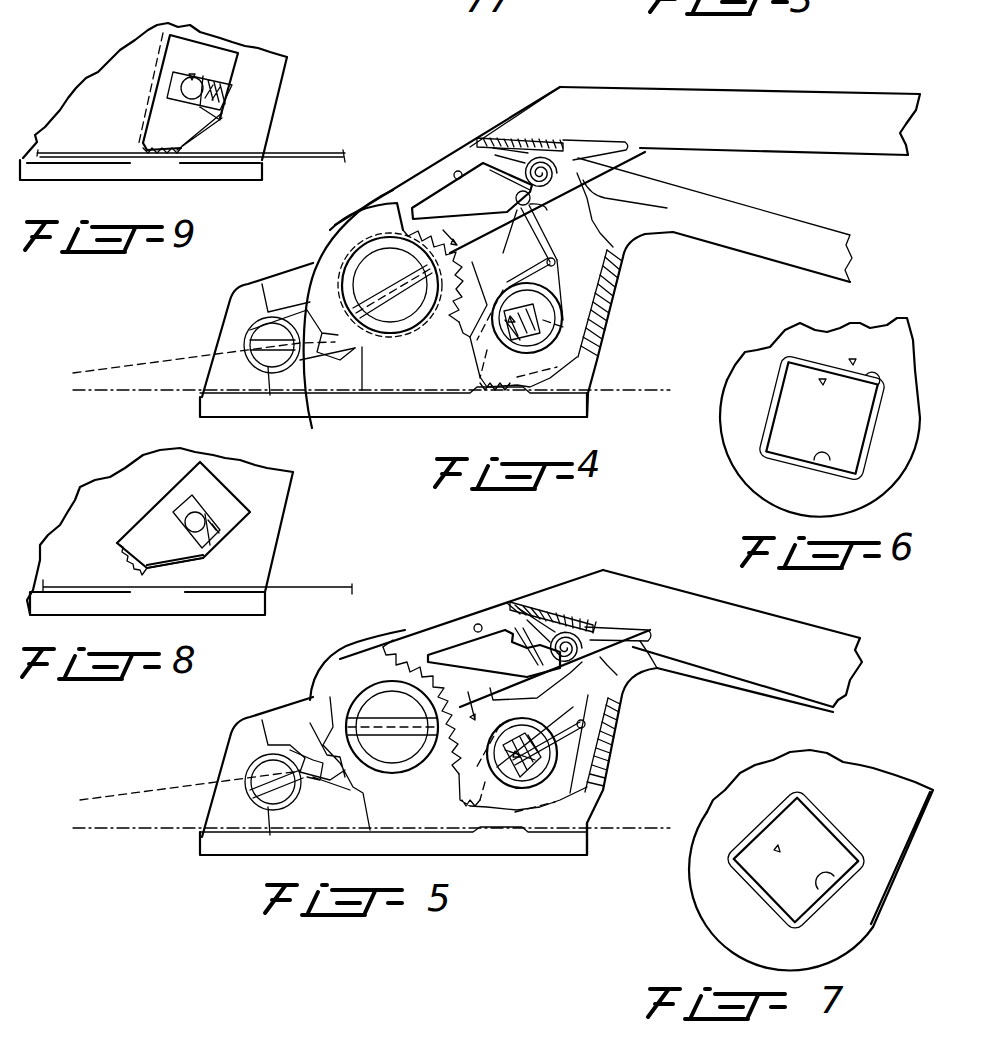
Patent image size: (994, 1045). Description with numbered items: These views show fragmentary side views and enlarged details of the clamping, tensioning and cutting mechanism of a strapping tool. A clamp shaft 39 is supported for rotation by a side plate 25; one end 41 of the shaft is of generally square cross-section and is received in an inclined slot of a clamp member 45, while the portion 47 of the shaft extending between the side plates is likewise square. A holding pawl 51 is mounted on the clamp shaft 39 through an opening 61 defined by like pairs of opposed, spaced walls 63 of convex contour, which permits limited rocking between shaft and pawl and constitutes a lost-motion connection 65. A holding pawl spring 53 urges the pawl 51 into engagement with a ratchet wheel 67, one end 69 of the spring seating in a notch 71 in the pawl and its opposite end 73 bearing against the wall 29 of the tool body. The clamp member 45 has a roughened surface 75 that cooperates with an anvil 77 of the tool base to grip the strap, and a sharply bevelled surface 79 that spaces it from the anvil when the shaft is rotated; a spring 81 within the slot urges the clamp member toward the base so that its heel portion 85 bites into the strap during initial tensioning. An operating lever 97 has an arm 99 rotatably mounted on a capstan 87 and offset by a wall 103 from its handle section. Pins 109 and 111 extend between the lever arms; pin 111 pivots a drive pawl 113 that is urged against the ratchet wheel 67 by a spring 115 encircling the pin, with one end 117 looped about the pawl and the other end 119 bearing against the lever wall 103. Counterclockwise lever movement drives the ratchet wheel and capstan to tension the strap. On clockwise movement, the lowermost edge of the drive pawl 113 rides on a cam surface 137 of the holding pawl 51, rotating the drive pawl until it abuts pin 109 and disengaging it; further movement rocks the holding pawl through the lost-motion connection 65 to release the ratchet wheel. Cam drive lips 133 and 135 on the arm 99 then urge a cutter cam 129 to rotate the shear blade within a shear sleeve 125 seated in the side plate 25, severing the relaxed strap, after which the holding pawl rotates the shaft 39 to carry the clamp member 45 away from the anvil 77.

In FIG. 9, the side plate 25 is at (280, 72).
In FIG. 4, the wall of the tool body 29 is at (610, 300).
In FIG. 5, the wall of the tool body 29 is at (600, 770).
In FIG. 9, the clamp shaft 39 is at (192, 78).
In FIG. 4, the clamp shaft 39 is at (515, 322).
In FIG. 6, the clamp shaft 39 is at (822, 383).
In FIG. 5, the clamp shaft 39 is at (520, 757).
In FIG. 7, the clamp shaft 39 is at (780, 850).
In FIG. 9, the square end of clamp shaft 41 is at (208, 125).
In FIG. 9, the clamp member 45 is at (162, 70).
In FIG. 8, the clamp member 45 is at (240, 508).
In FIG. 4, the square portion of clamp shaft 47 is at (590, 358).
In FIG. 6, the square portion of clamp shaft 47 is at (790, 432).
In FIG. 5, the square portion of clamp shaft 47 is at (545, 790).
In FIG. 7, the square portion of clamp shaft 47 is at (818, 832).
In FIG. 4, the holding pawl 51 is at (600, 233).
In FIG. 6, the holding pawl 51 is at (736, 420).
In FIG. 5, the holding pawl 51 is at (622, 700).
In FIG. 7, the holding pawl 51 is at (706, 880).
In FIG. 4, the holding pawl spring 53 is at (537, 327).
In FIG. 5, the holding pawl spring 53 is at (545, 760).
In FIG. 6, the opening 61 is at (786, 367).
In FIG. 7, the opening 61 is at (816, 802).
In FIG. 6, the walls 63 is at (882, 383).
In FIG. 7, the walls 63 is at (824, 905).
In FIG. 6, the lost-motion connection 65 is at (853, 363).
In FIG. 4, the ratchet wheel 67 is at (385, 205).
In FIG. 5, the ratchet wheel 67 is at (445, 673).
In FIG. 4, the end of holding pawl spring 69 is at (527, 282).
In FIG. 5, the end of holding pawl spring 69 is at (557, 727).
In FIG. 4, the notch 71 is at (556, 262).
In FIG. 5, the notch 71 is at (612, 738).
In FIG. 4, the opposite end of holding pawl spring 73 is at (618, 272).
In FIG. 5, the opposite end of holding pawl spring 73 is at (620, 760).
In FIG. 8, the roughened surface 75 is at (140, 562).
In FIG. 9, the anvil 77 is at (165, 153).
In FIG. 4, the anvil 77 is at (493, 393).
In FIG. 5, the anvil 77 is at (505, 835).
In FIG. 9, the bevelled surface 79 is at (222, 120).
In FIG. 9, the spring 81 is at (232, 82).
In FIG. 8, the heel portion 85 is at (117, 545).
In FIG. 4, the capstan 87 is at (360, 277).
In FIG. 5, the capstan 87 is at (372, 700).
In FIG. 4, the operating lever 97 is at (650, 92).
In FIG. 5, the operating lever 97 is at (615, 585).
In FIG. 4, the arm 99 is at (430, 180).
In FIG. 5, the arm 99 is at (455, 628).
In FIG. 4, the walls 103 is at (515, 136).
In FIG. 5, the walls 103 is at (547, 600).
In FIG. 4, the pin 109 is at (459, 170).
In FIG. 5, the pin 109 is at (478, 623).
In FIG. 4, the pin 111 is at (552, 158).
In FIG. 5, the pin 111 is at (580, 650).
In FIG. 4, the drive pawl 113 is at (440, 200).
In FIG. 5, the drive pawl 113 is at (452, 647).
In FIG. 4, the spring 115 is at (576, 157).
In FIG. 5, the spring 115 is at (648, 632).
In FIG. 4, the end of spring 117 is at (505, 193).
In FIG. 5, the end of spring 117 is at (525, 625).
In FIG. 4, the opposite end of spring 119 is at (540, 156).
In FIG. 5, the opposite end of spring 119 is at (570, 636).
In FIG. 4, the shear sleeve 125 is at (245, 325).
In FIG. 5, the shear sleeve 125 is at (245, 770).
In FIG. 4, the cam 129 is at (348, 315).
In FIG. 5, the cam 129 is at (275, 742).
In FIG. 4, the cam drive lip 133 is at (280, 288).
In FIG. 5, the cam drive lip 133 is at (316, 698).
In FIG. 4, the cam drive lip 135 is at (350, 357).
In FIG. 5, the cam drive lip 135 is at (310, 778).
In FIG. 4, the cam surface 137 is at (537, 210).
In FIG. 5, the cam surface 137 is at (655, 668).